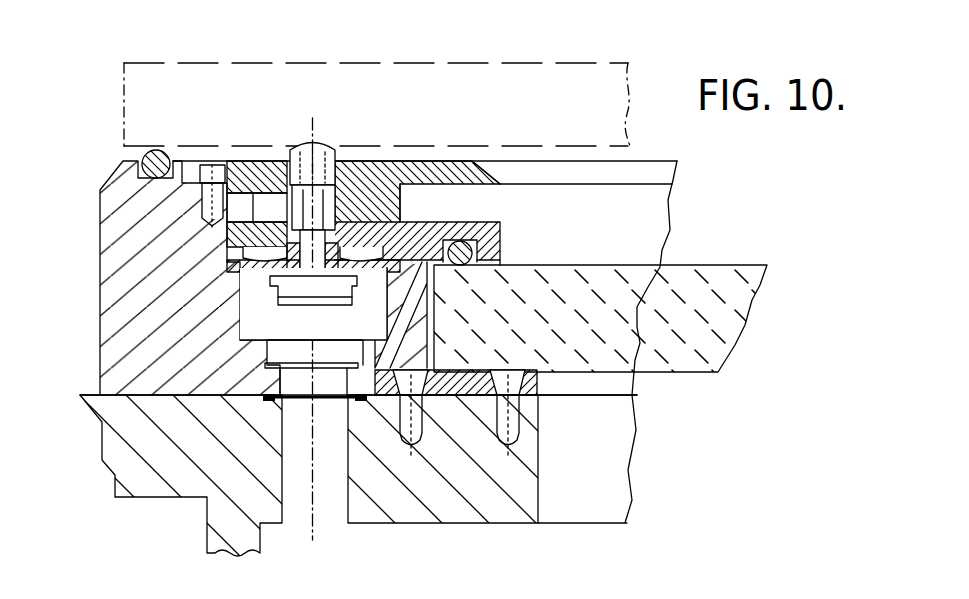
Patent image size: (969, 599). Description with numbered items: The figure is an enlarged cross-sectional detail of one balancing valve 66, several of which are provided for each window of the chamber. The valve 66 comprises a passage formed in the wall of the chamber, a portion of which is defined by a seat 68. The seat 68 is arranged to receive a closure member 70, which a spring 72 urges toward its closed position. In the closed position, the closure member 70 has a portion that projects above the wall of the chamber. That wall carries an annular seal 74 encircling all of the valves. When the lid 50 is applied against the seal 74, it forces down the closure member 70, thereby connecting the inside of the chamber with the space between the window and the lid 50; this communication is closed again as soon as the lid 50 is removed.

The lid 50 is at (432, 61).
The balancing valve 66 is at (270, 158).
The seat 68 is at (337, 248).
The closure member 70 is at (330, 232).
The spring 72 is at (268, 326).
The annular seal 74 is at (140, 162).